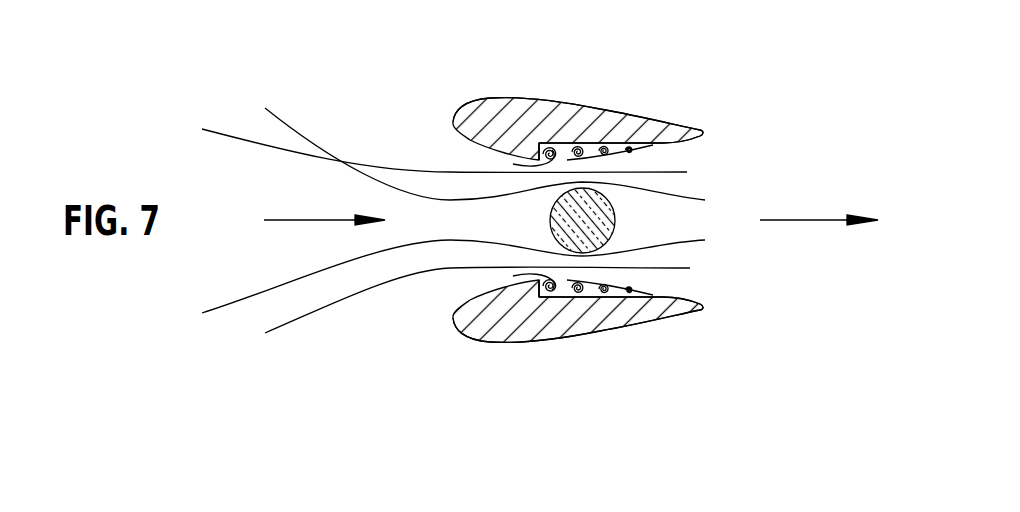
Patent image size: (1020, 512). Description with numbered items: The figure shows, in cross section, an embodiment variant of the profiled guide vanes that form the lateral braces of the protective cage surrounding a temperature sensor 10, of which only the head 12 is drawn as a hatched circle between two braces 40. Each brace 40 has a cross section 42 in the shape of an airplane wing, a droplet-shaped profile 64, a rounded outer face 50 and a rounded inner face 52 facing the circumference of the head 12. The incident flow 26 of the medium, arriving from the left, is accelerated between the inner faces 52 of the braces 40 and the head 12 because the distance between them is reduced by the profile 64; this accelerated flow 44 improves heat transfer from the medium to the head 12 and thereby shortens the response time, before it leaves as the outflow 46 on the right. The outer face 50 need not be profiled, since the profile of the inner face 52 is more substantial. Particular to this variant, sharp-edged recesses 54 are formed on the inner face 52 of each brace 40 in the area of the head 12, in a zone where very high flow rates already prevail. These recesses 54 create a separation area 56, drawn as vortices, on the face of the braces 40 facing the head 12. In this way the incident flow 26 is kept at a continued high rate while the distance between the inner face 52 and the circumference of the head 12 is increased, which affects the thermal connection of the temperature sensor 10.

The temperature sensor 10 is at (638, 220).
The head of temperature sensor 12 is at (586, 221).
The incident flow 26 is at (316, 220).
The brace 40 is at (578, 222).
The cross section of brace 42 is at (540, 123).
The accelerated flow 44 is at (582, 170).
The outflow 46 is at (818, 218).
The outer face 50 is at (646, 106).
The inner face 52 is at (539, 147).
The recess 54 is at (655, 145).
The separation area 56 is at (617, 150).
The profile 64 is at (425, 111).